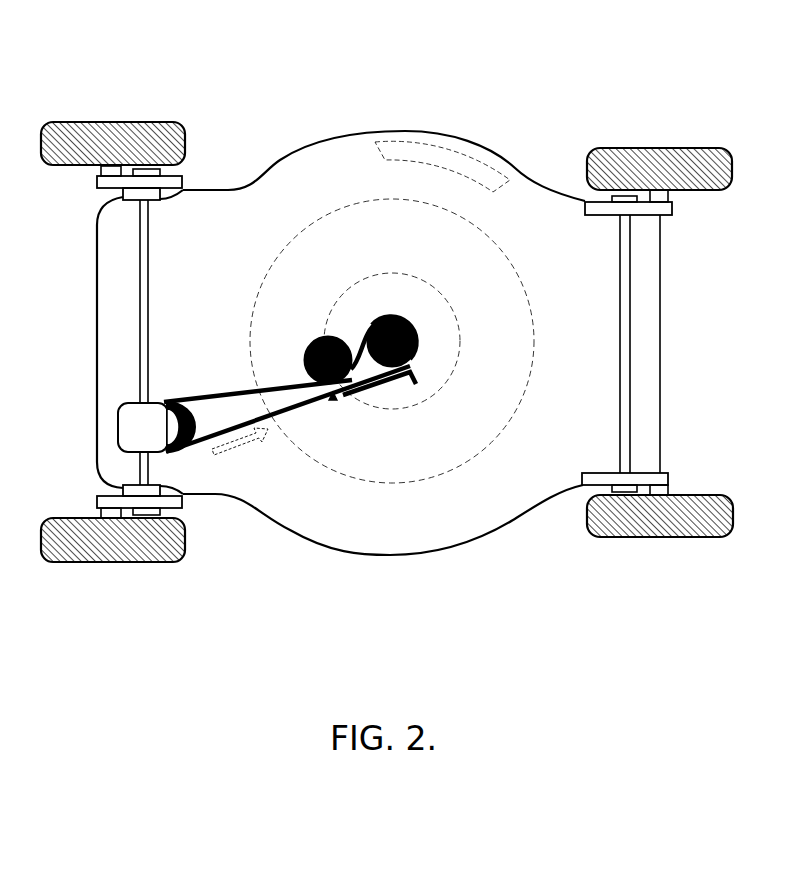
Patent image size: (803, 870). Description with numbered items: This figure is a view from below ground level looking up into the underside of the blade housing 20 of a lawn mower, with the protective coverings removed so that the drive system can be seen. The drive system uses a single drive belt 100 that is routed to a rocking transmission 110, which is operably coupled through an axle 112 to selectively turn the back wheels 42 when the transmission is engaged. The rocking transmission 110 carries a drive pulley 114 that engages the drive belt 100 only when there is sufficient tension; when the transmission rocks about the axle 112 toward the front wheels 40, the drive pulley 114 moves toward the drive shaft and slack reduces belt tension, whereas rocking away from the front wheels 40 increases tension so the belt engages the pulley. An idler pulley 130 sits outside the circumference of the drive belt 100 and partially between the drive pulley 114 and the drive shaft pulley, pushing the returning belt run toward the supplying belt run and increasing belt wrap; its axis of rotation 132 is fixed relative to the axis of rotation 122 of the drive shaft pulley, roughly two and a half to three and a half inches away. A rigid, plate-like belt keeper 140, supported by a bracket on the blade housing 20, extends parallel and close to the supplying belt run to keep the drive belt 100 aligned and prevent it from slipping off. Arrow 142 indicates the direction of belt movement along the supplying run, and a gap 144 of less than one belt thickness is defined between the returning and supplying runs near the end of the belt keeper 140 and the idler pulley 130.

The blade housing 20 is at (425, 532).
The front wheels 40 is at (645, 125).
The back wheels 42 is at (110, 110).
The drive belt 100 is at (238, 392).
The rocking transmission 110 is at (118, 425).
The axle 112 is at (140, 290).
The drive pulley 114 is at (196, 418).
The axis of rotation of the drive shaft pulley 122 is at (392, 340).
The idler pulley 130 is at (318, 345).
The axis of rotation of the idler pulley 132 is at (328, 358).
The belt keeper 140 is at (383, 391).
The arrow 142 is at (232, 440).
The gap 144 is at (334, 400).